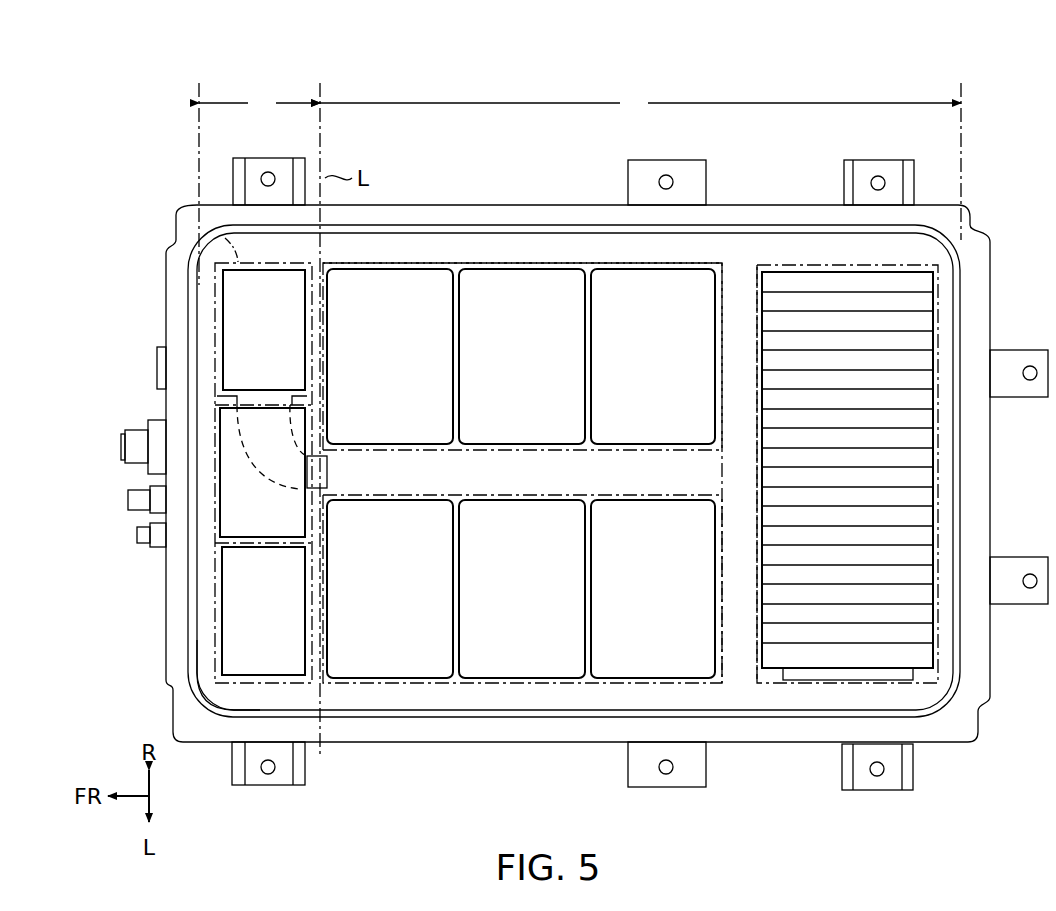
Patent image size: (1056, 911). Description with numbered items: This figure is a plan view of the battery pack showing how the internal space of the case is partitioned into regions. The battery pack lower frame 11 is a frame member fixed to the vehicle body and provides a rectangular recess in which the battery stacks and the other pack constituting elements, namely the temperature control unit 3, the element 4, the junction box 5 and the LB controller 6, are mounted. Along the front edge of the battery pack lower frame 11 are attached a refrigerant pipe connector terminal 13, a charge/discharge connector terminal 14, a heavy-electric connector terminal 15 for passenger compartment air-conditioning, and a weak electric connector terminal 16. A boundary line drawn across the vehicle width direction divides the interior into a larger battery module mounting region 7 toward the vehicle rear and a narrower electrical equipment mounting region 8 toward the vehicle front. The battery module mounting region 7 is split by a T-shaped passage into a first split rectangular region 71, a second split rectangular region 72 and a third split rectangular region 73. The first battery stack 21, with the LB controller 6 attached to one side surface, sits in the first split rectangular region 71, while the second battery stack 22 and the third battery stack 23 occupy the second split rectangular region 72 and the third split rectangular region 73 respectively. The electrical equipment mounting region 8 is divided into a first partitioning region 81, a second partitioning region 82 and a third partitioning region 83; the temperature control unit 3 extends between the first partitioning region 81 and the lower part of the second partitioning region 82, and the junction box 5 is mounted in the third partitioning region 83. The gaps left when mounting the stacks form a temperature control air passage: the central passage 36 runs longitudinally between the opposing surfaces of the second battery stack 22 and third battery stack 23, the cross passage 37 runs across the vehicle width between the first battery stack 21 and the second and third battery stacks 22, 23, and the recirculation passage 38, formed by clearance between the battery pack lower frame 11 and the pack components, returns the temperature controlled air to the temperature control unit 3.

The temperature control unit 3 is at (249, 315).
The pack constituting element 4 is at (249, 503).
The junction box 5 is at (249, 623).
The LB controller 6 is at (818, 674).
The battery module mounting region 7 is at (640, 420).
The electrical equipment mounting region 8 is at (259, 184).
The battery pack lower frame 11 is at (393, 727).
The refrigerant pipe connector terminal 13 is at (157, 370).
The charge/discharge connector terminal 14 is at (121, 450).
The heavy-electric connector terminal 15 is at (128, 500).
The weak electric connector terminal 16 is at (137, 535).
The first battery stack 21 is at (852, 480).
The second battery stack 22 is at (518, 347).
The third battery stack 23 is at (518, 595).
The central passage 36 is at (543, 473).
The cross passage 37 is at (738, 415).
The recirculation passage 38 is at (673, 252).
The first split rectangular region 71 is at (805, 265).
The second split rectangular region 72 is at (495, 263).
The third split rectangular region 73 is at (455, 683).
The first partitioning region 81 is at (213, 233).
The second partitioning region 82 is at (213, 422).
The third partitioning region 83 is at (195, 663).